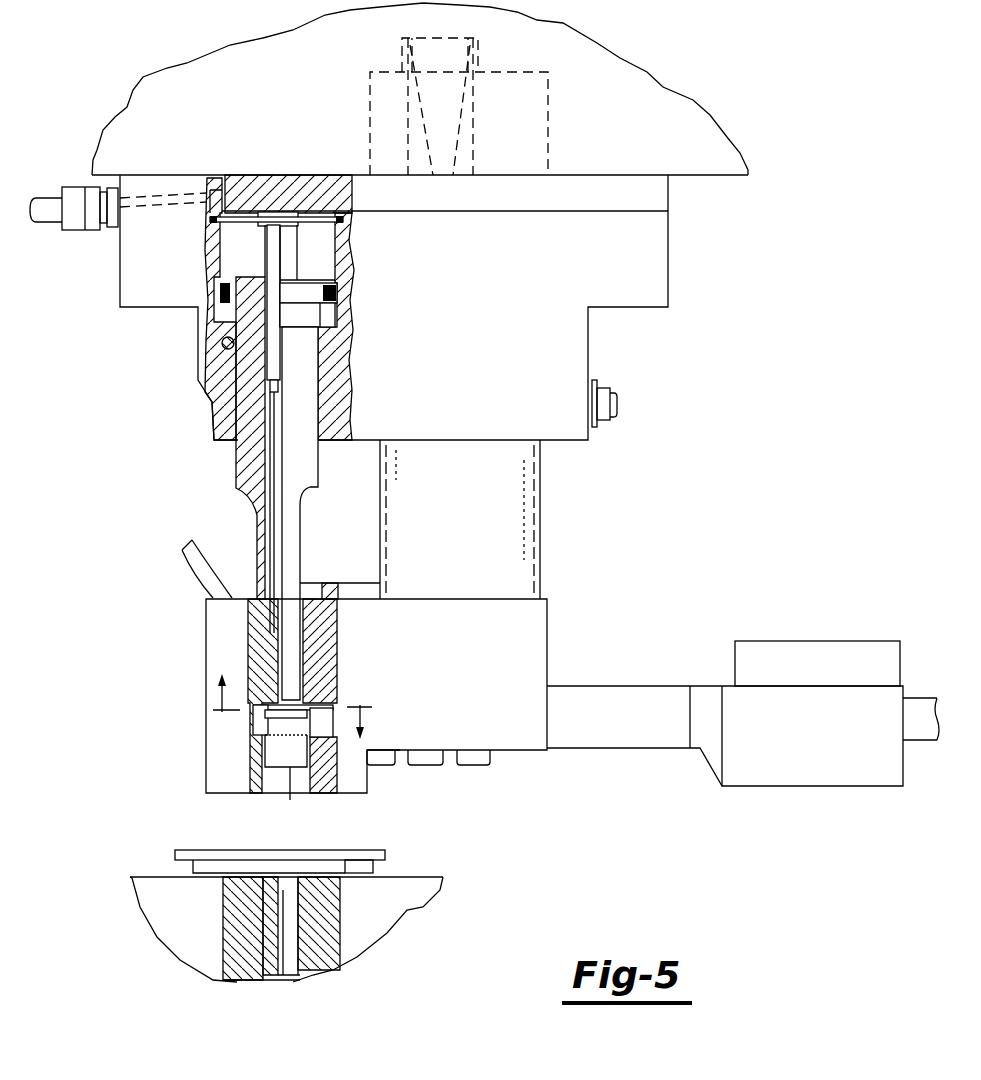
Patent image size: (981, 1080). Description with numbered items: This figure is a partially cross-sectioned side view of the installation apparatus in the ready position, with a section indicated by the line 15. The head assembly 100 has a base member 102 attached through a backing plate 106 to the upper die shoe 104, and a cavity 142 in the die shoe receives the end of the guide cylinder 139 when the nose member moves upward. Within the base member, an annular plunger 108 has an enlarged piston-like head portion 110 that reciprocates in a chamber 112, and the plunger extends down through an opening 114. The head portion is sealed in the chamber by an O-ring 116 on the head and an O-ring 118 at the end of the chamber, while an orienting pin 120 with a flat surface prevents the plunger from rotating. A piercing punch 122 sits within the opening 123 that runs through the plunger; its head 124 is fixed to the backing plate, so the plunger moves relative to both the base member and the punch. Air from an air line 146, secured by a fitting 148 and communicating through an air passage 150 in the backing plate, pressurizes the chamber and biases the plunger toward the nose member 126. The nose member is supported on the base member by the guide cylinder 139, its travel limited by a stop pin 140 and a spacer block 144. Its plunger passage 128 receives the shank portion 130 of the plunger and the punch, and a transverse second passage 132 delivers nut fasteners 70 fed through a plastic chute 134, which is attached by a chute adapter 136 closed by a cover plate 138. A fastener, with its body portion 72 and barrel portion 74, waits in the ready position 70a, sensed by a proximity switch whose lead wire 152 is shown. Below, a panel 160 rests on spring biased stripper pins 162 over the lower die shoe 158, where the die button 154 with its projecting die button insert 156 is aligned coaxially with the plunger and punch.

The section line 15- 15 is at (298, 693).
The self-riveting nut fastener 70 is at (392, 768).
The ready position 70a is at (290, 762).
The body portion 72 is at (267, 723).
The barrel portion 74 is at (275, 752).
The head assembly 100 is at (654, 477).
The base member 102 is at (575, 258).
The upper die shoe 104 is at (653, 92).
The backing plate 106 is at (668, 200).
The annular plunger 108 is at (262, 468).
The head portion 110 is at (333, 312).
The chamber 112 is at (317, 267).
The opening 114 is at (318, 406).
The O-ring 116 is at (337, 298).
The O-ring 118 is at (343, 220).
The orienting pin 120 is at (222, 343).
The piercing punch 122 is at (273, 247).
The opening 123 is at (263, 408).
The head 124 is at (300, 212).
The nose member 126 is at (215, 632).
The plunger passage 128 is at (300, 660).
The shank portion 130 is at (300, 538).
The second passage 132 is at (360, 743).
The plastic chute 134 is at (921, 704).
The chute adapter 136 is at (801, 776).
The cover plate 138 is at (829, 647).
The guide cylinder 139 is at (505, 533).
The stop pin 140 is at (603, 393).
The cavity 142 is at (482, 95).
The spacer block 144 is at (350, 608).
The air line 146 is at (48, 217).
The fitting 148 is at (72, 230).
The air passage 150 is at (227, 187).
The lead wire 152 is at (192, 558).
The die button 154 is at (250, 970).
The die button insert 156 is at (297, 963).
The lower die shoe 158 is at (157, 908).
The panel 160 is at (250, 850).
The stripper pins 162 is at (370, 868).